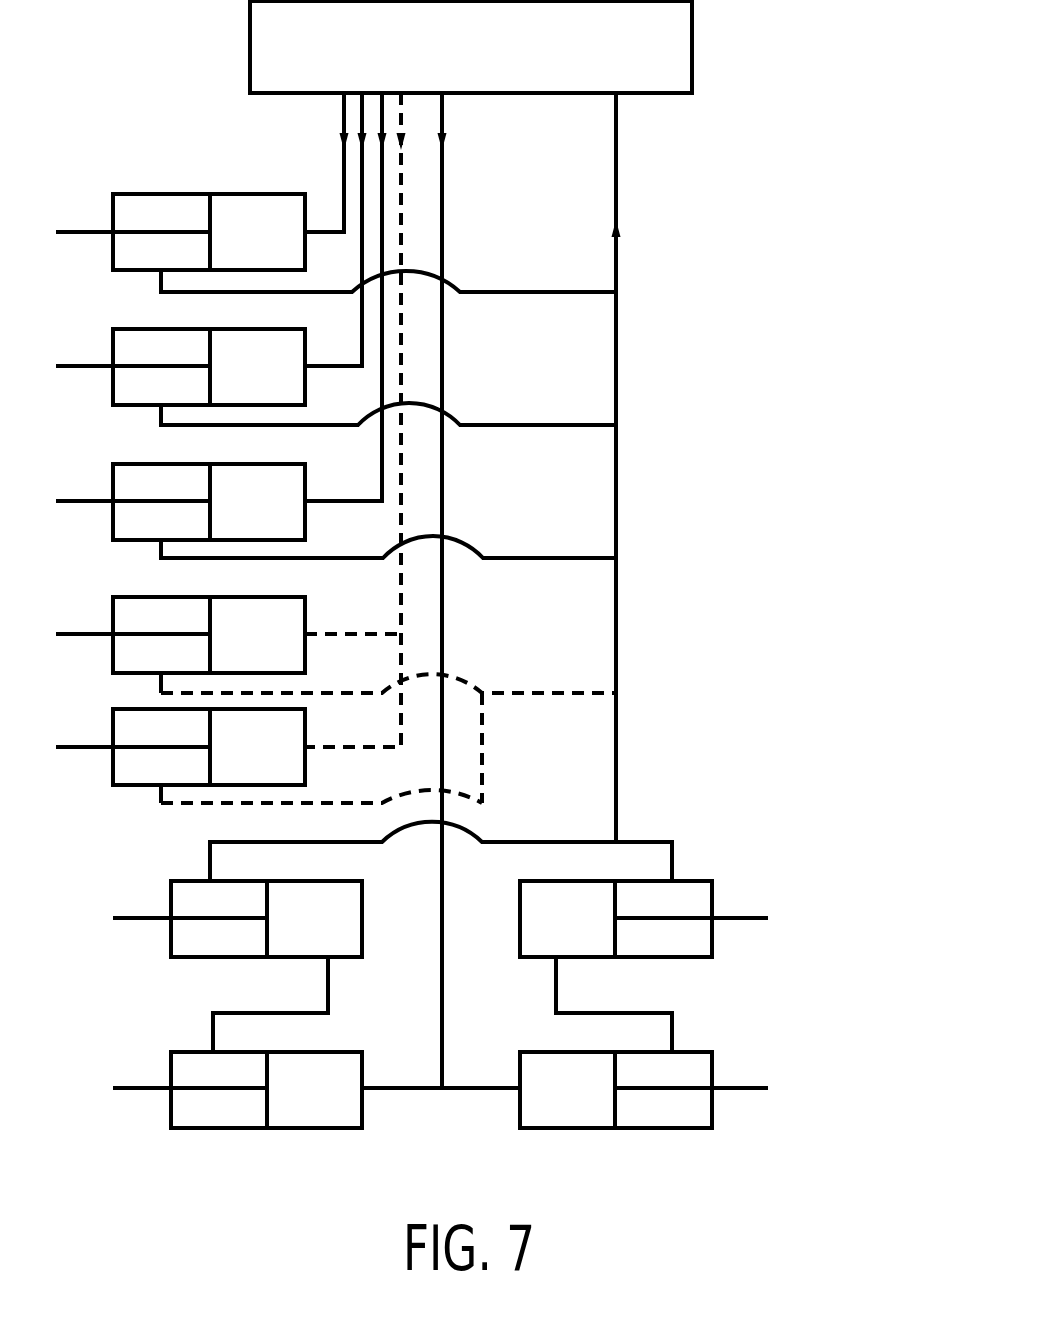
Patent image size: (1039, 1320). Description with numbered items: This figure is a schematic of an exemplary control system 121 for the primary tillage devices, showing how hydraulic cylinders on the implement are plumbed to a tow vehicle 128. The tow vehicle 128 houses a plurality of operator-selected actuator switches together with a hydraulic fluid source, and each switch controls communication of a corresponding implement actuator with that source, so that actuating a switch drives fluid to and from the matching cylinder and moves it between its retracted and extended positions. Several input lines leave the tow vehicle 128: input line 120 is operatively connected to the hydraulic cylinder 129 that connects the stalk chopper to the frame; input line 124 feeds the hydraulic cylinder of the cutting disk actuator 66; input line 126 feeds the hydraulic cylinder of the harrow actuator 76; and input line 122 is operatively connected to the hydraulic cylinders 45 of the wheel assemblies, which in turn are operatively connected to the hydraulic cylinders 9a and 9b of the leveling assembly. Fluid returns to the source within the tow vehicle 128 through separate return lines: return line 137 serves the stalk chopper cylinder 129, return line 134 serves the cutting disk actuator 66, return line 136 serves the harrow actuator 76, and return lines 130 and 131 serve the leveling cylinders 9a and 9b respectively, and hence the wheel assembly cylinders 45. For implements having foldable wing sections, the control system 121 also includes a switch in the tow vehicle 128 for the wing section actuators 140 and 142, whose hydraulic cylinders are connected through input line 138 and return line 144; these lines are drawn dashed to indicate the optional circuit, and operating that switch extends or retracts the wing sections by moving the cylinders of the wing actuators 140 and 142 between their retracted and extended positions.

The tow vehicle 128 is at (694, 48).
The hydraulic cylinder 129 is at (222, 188).
The input line 120 is at (344, 175).
The cutting disk actuator 66 is at (108, 322).
The input line 124 is at (360, 322).
The return line 137 is at (468, 292).
The control system 121 is at (742, 345).
The return line 136 is at (468, 425).
The harrow actuator 76 is at (108, 457).
The input line 126 is at (344, 501).
The return line 134 is at (468, 558).
The wing section actuator 140 is at (108, 590).
The input line 138 is at (401, 605).
The wing section actuator 142 is at (108, 700).
The return line 144 is at (548, 693).
The return line 131 is at (657, 842).
The hydraulic cylinder 9a is at (168, 875).
The hydraulic cylinder 9b is at (716, 875).
The return line 130 is at (390, 843).
The input line 122 is at (442, 1005).
The hydraulic cylinder 45 is at (246, 1140).